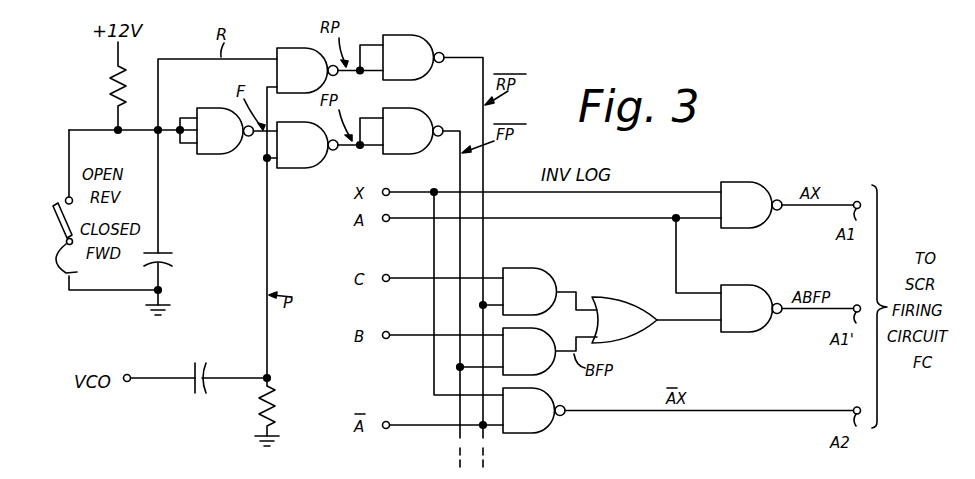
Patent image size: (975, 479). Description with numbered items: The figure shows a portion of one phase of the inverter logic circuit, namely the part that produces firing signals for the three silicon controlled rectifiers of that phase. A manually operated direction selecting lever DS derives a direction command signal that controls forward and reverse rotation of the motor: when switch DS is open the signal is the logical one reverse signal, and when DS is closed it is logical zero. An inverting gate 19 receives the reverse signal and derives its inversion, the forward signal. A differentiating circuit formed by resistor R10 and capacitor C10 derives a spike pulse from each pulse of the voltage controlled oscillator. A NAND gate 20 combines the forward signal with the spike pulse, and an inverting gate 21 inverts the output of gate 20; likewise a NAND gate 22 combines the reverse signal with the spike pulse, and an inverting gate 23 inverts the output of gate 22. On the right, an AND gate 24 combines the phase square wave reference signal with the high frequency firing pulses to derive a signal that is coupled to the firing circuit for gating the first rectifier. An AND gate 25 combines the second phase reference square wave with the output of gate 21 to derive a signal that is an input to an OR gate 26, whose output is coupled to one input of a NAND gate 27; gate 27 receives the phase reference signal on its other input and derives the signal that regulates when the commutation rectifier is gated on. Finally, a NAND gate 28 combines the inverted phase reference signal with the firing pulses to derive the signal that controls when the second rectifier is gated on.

The inverting gate 19 is at (225, 131).
The NAND gate 20 is at (307, 145).
The inverting gate 21 is at (413, 131).
The NAND gate 22 is at (307, 70).
The inverting gate 23 is at (413, 57).
The AND gate 24 is at (751, 205).
The AND gate 25 is at (529, 351).
The OR gate 26 is at (624, 320).
The NAND gate 27 is at (751, 308).
The NAND gate 28 is at (534, 410).
The differentiating circuit capacitor C10 is at (206, 366).
The differentiating circuit resistor R10 is at (283, 413).
The direction selecting lever DS is at (97, 280).